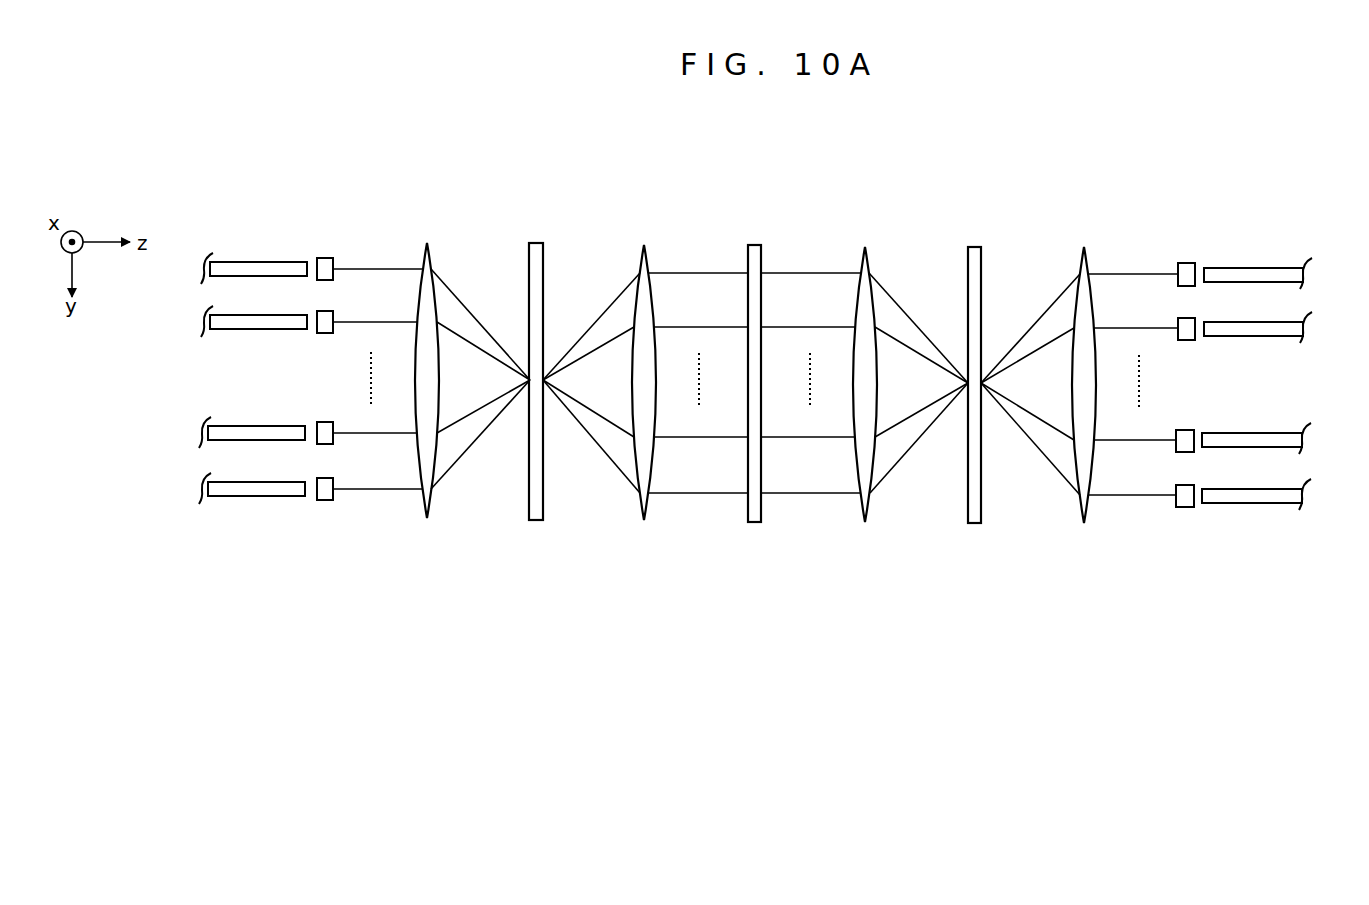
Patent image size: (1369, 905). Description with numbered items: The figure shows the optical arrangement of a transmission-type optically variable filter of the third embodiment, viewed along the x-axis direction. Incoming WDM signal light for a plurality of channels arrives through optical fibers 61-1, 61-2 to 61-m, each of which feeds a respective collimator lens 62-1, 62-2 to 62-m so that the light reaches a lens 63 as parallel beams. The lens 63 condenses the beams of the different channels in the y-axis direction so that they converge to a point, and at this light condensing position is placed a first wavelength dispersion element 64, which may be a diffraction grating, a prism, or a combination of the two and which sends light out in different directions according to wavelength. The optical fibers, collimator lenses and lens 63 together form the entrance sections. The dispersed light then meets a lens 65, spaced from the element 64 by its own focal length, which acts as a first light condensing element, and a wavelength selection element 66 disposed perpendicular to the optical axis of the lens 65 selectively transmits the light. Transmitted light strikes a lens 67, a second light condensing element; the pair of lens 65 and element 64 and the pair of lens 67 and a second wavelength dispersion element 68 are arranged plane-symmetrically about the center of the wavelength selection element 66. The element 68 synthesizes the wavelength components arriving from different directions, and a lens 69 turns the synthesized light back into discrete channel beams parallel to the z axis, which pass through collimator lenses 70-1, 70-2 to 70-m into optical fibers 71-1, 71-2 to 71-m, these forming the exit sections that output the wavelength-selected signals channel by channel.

The optical fiber 61-1 is at (257, 262).
The optical fiber 61-2 is at (257, 329).
The optical fiber 61-m is at (253, 496).
The collimator lens 62-1 is at (337, 259).
The collimator lens 62-2 is at (317, 333).
The collimator lens 62-m is at (333, 500).
The lens 63 is at (433, 257).
The first wavelength dispersion element 64 is at (545, 255).
The lens 65 is at (648, 257).
The wavelength selection element 66 is at (765, 255).
The lens 67 is at (870, 258).
The second wavelength dispersion element 68 is at (983, 258).
The lens 69 is at (1088, 258).
The collimator lens 70-1 is at (1178, 267).
The collimator lens 70-2 is at (1180, 340).
The collimator lens 70-m is at (1177, 507).
The optical fiber 71-1 is at (1258, 268).
The optical fiber 71-2 is at (1257, 335).
The optical fiber 71-m is at (1255, 502).